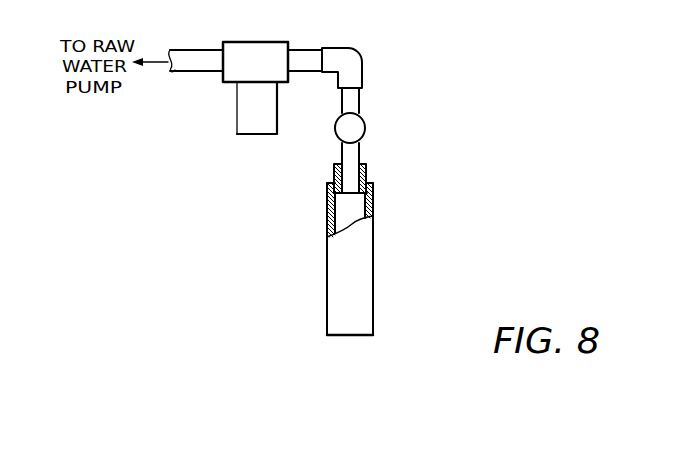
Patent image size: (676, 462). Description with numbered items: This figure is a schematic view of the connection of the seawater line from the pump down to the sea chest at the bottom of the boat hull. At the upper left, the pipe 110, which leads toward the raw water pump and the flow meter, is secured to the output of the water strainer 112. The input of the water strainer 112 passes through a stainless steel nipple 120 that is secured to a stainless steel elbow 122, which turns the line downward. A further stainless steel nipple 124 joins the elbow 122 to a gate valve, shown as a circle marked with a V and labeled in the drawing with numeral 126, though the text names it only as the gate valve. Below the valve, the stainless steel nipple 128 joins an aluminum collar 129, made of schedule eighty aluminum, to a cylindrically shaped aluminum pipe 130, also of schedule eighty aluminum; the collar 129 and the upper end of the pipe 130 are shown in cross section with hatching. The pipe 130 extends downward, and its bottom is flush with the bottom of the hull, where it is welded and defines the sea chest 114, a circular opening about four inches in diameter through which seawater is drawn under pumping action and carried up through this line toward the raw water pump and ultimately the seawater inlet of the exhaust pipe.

The pipe 110 is at (204, 54).
The water strainer 112 is at (276, 124).
The sea chest 114 is at (371, 337).
The stainless steel nipple 120 is at (303, 50).
The stainless steel elbow 122 is at (363, 58).
The stainless steel nipple 124 is at (361, 104).
The valve 126 is at (365, 128).
The stainless steel nipple 128 is at (364, 158).
The aluminum collar 129 is at (333, 164).
The aluminum pipe 130 is at (373, 253).